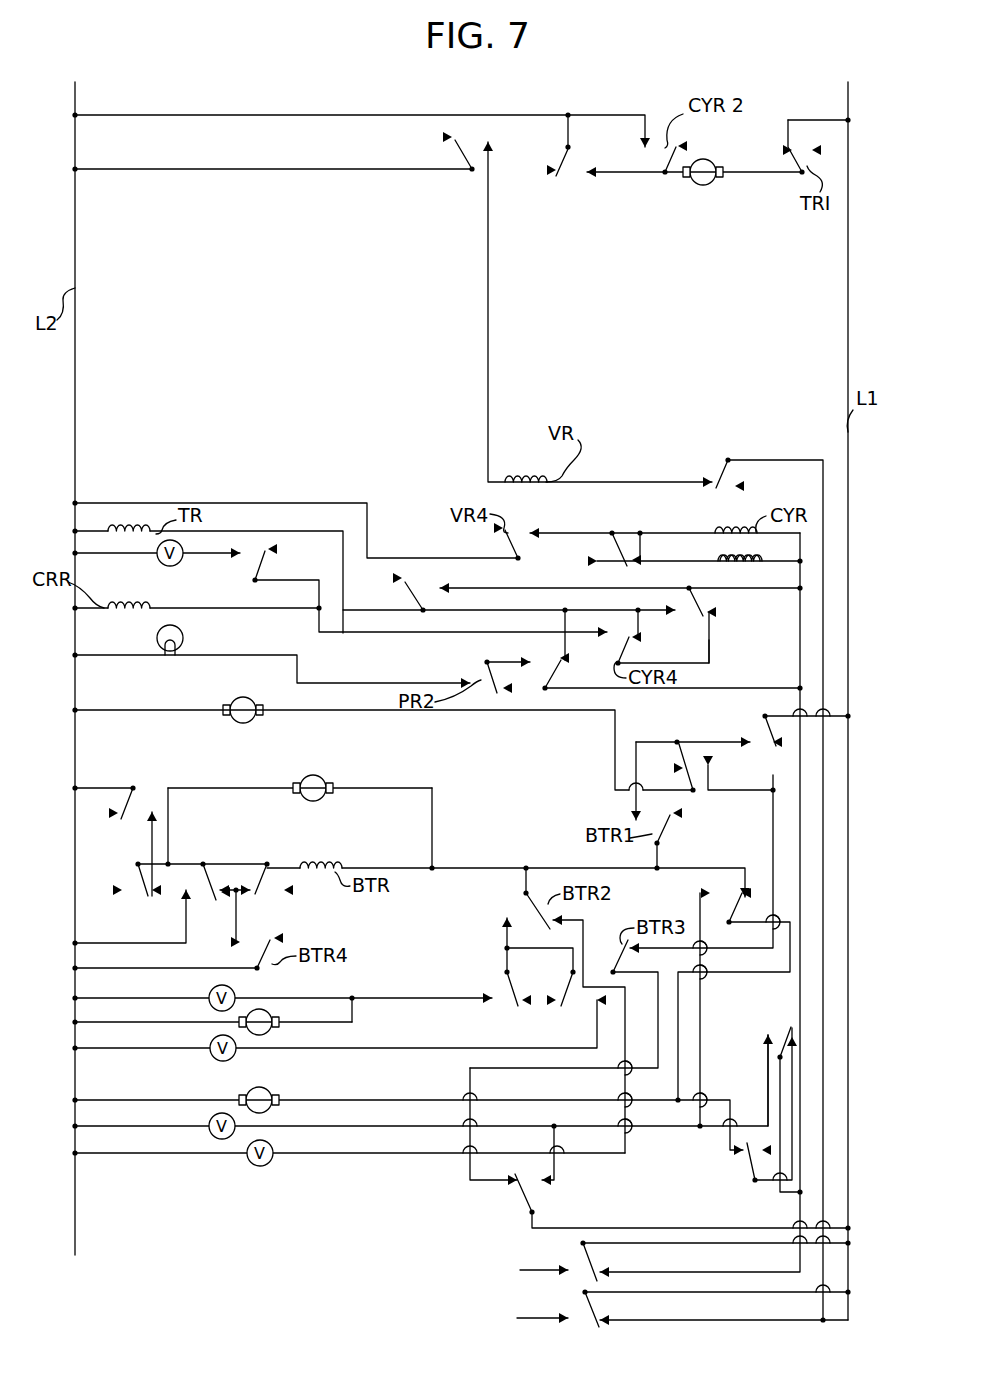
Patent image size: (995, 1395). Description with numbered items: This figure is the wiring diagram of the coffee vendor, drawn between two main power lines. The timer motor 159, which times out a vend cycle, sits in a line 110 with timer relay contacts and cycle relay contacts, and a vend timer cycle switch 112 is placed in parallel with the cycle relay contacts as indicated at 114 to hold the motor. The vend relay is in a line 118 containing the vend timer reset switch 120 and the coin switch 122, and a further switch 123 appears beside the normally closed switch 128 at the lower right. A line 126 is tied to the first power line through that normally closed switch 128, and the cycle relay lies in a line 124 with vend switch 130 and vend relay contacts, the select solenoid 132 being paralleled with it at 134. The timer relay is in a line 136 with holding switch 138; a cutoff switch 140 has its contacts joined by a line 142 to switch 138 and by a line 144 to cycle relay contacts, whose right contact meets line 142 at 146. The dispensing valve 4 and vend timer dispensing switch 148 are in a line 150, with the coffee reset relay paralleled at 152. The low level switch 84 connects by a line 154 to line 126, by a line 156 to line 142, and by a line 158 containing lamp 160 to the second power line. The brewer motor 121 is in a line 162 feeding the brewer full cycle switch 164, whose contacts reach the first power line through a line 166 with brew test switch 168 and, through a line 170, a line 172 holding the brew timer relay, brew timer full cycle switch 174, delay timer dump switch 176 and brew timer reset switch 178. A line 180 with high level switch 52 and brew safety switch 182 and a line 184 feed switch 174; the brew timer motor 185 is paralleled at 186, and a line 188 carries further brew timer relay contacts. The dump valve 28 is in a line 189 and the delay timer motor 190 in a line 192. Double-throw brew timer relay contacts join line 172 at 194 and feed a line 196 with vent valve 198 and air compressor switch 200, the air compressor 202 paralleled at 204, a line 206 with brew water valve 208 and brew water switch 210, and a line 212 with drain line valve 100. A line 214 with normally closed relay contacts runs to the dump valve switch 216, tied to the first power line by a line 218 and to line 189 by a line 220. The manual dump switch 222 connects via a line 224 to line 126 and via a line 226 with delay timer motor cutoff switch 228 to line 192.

The dispensing valve 4 is at (172, 565).
The dump valve 28 is at (208, 1126).
The high level switch 52 is at (116, 822).
The low level switch 84 is at (546, 674).
The drain line valve 100 is at (256, 1166).
The line 110 is at (585, 115).
The vend timer cycle switch 112 is at (565, 168).
The parallel connection 114 is at (616, 174).
The line 118 is at (260, 170).
The vend timer reset switch 120 is at (720, 462).
The brewer motor 121 is at (246, 723).
The coin switch 122 is at (468, 163).
The contact 123 is at (570, 1304).
The line 124 is at (260, 503).
The line 126 is at (796, 660).
The normally closed switch 128 is at (578, 1264).
The vend switch 130 is at (624, 560).
The select solenoid 132 is at (744, 564).
The parallel connection 134 is at (652, 558).
The line 136 is at (320, 538).
The timer relay holding switch 138 is at (408, 606).
The cutoff switch 140 is at (700, 612).
The line 142 is at (566, 610).
The line 144 is at (709, 652).
The connection 146 is at (638, 610).
The vend timer dispensing switch 148 is at (266, 576).
The line 150 is at (96, 553).
The parallel connection 152 is at (260, 610).
The line 154 is at (716, 694).
The line 156 is at (562, 626).
The line 158 is at (305, 653).
The timer motor 159 is at (710, 162).
The lamp 160 is at (183, 632).
The line 162 is at (374, 716).
The brewer full cycle switch 164 is at (694, 764).
The line 166 is at (740, 742).
The brew test switch 168 is at (765, 716).
The line 170 is at (670, 739).
The line 172 is at (566, 866).
The brew timer full cycle switch 174 is at (218, 874).
The delay timer dump switch 176 is at (722, 902).
The brew timer reset switch 178 is at (259, 896).
The line 180 is at (134, 766).
The brew safety switch 182 is at (146, 896).
The line 184 is at (100, 939).
The brew timer motor 185 is at (320, 802).
The parallel connection 186 is at (436, 810).
The line 188 is at (232, 940).
The line 189 is at (372, 1126).
The delay timer motor 190 is at (271, 1086).
The line 192 is at (758, 982).
The connection 194 is at (520, 878).
The line 196 is at (504, 960).
The vent valve 198 is at (208, 990).
The air compressor switch 200 is at (508, 1006).
The air compressor 202 is at (274, 1030).
The parallel connection 204 is at (368, 1008).
The line 206 is at (514, 952).
The brew water valve 208 is at (225, 1062).
The brew water switch 210 is at (566, 1006).
The line 212 is at (340, 1154).
The line 214 is at (708, 794).
The dump valve switch 216 is at (526, 1198).
The line 218 is at (656, 1226).
The line 220 is at (556, 1180).
The manual dump switch 222 is at (782, 1016).
The line 224 is at (778, 1062).
The line 226 is at (710, 1098).
The delay timer motor cutoff switch 228 is at (744, 1152).